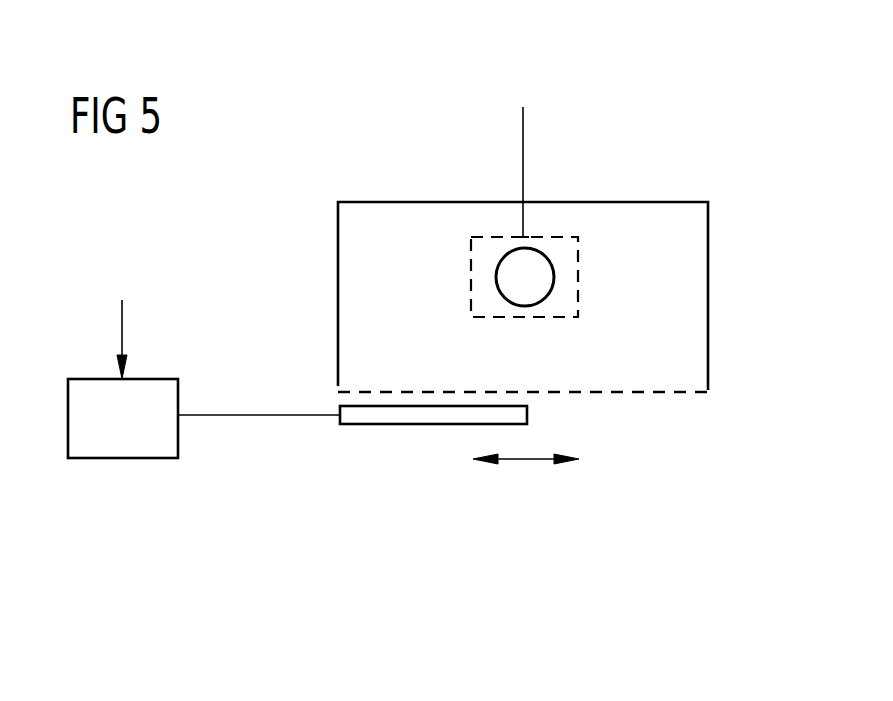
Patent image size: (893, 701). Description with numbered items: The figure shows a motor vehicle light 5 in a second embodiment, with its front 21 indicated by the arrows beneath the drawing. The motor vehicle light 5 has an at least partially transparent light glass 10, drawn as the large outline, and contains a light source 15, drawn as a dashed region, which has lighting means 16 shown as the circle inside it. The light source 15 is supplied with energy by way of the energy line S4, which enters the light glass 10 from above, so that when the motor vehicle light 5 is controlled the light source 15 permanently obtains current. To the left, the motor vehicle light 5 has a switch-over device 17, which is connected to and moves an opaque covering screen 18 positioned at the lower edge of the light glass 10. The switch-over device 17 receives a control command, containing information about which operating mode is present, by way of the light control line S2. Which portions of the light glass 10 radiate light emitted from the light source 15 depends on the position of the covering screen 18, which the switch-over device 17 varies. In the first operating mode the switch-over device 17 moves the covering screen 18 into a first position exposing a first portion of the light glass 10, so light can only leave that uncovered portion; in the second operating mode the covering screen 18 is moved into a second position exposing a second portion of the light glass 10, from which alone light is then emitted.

The motor vehicle light 5 is at (707, 172).
The at least partially transparent light glass 10 is at (610, 393).
The light source 15 is at (578, 255).
The lighting means 16 is at (496, 278).
The switch-over device 17 is at (123, 459).
The covering screen 18 is at (415, 425).
The front 21 is at (527, 489).
The light control line S2 is at (122, 332).
The energy line S4 is at (523, 152).